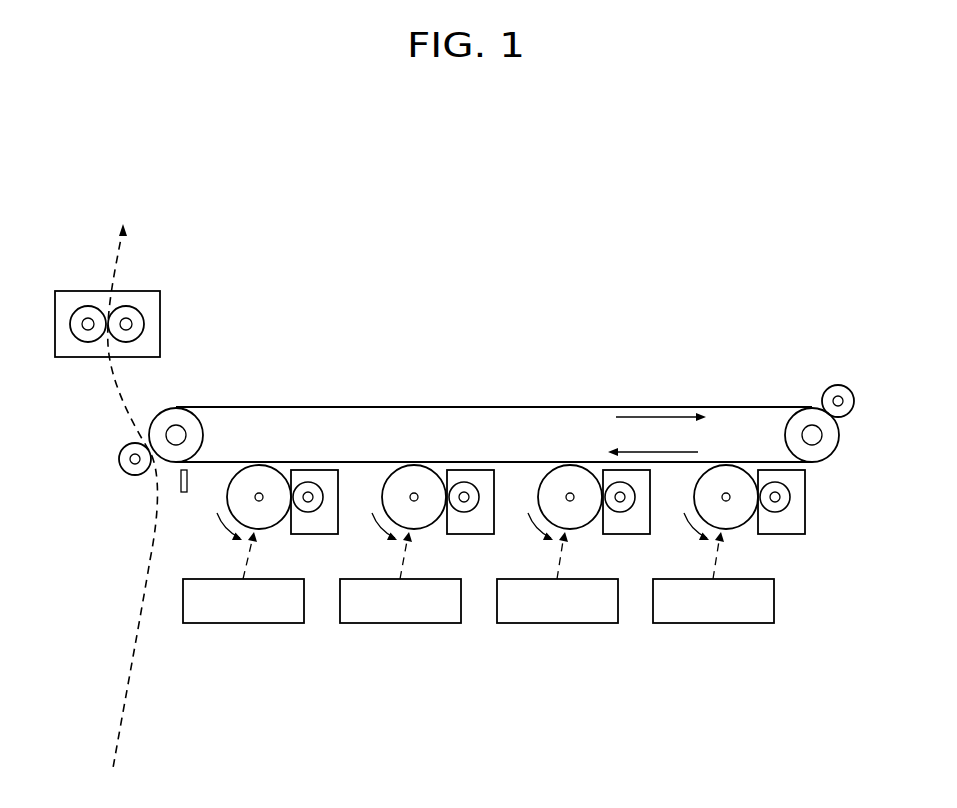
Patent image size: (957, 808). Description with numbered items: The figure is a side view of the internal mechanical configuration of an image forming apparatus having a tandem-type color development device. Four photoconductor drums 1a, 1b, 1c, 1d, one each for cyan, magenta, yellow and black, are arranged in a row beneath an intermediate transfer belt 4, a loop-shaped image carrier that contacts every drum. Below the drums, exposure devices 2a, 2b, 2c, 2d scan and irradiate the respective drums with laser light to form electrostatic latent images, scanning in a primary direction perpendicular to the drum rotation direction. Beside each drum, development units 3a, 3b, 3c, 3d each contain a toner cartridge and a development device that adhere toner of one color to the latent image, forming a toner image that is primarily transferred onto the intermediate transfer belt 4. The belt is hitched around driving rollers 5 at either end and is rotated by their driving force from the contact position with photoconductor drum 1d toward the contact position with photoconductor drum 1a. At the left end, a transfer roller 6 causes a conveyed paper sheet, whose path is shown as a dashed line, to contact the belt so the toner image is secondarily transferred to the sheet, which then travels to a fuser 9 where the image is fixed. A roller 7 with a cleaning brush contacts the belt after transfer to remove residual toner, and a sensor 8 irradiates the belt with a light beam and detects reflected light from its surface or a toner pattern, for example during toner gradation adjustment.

The photoconductor drum 1a is at (234, 480).
The photoconductor drum 1b is at (389, 480).
The photoconductor drum 1c is at (545, 480).
The photoconductor drum 1d is at (701, 480).
The exposure device 2a is at (243, 623).
The exposure device 2b is at (400, 623).
The exposure device 2c is at (557, 623).
The exposure device 2d is at (713, 623).
The development unit 3a is at (308, 534).
The development unit 3b is at (464, 534).
The development unit 3c is at (620, 534).
The development unit 3d is at (775, 534).
The intermediate transfer belt 4 is at (618, 407).
The driving roller 5 is at (158, 414).
The transfer roller 6 is at (124, 470).
The roller 7 is at (838, 385).
The sensor 8 is at (181, 492).
The fuser 9 is at (160, 320).